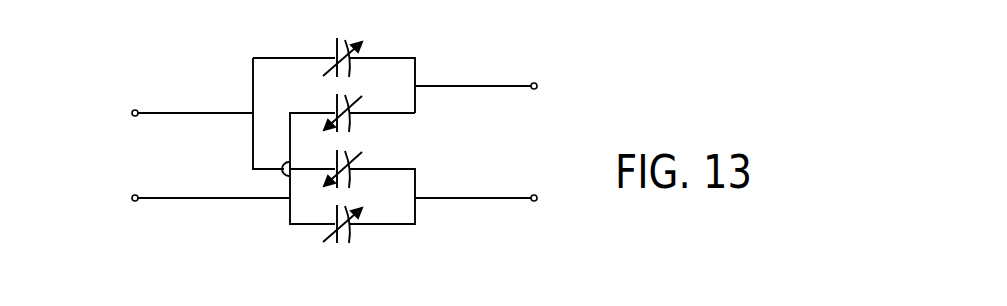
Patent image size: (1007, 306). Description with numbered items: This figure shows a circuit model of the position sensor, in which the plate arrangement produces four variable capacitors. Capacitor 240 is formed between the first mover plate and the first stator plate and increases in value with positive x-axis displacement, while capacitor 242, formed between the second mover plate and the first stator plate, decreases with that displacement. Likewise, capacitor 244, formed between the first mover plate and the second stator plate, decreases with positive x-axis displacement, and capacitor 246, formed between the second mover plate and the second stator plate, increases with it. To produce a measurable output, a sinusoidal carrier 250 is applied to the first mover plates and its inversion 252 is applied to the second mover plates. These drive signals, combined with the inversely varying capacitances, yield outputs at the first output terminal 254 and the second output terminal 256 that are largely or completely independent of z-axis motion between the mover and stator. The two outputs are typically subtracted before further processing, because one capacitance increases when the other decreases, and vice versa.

The capacitor 240 is at (342, 38).
The capacitor 242 is at (339, 134).
The capacitor 244 is at (344, 153).
The capacitor 246 is at (340, 246).
The sinusoidal carrier 250 is at (132, 108).
The inversion of the sinusoidal carrier 252 is at (135, 208).
The S1 terminal 254 is at (535, 80).
The S2 terminal 256 is at (535, 205).